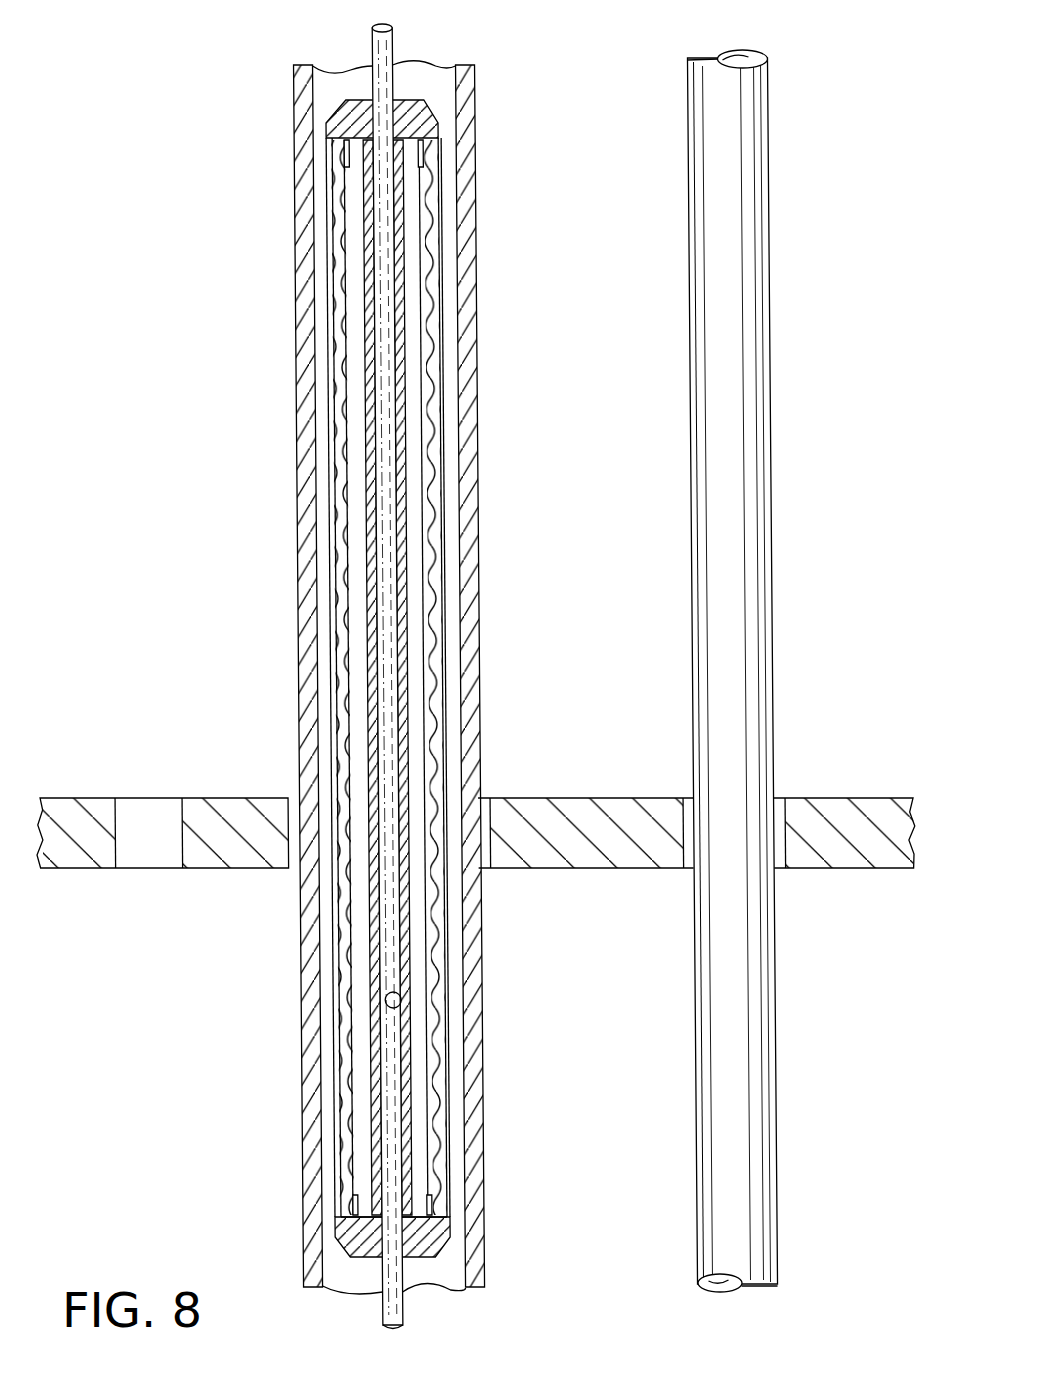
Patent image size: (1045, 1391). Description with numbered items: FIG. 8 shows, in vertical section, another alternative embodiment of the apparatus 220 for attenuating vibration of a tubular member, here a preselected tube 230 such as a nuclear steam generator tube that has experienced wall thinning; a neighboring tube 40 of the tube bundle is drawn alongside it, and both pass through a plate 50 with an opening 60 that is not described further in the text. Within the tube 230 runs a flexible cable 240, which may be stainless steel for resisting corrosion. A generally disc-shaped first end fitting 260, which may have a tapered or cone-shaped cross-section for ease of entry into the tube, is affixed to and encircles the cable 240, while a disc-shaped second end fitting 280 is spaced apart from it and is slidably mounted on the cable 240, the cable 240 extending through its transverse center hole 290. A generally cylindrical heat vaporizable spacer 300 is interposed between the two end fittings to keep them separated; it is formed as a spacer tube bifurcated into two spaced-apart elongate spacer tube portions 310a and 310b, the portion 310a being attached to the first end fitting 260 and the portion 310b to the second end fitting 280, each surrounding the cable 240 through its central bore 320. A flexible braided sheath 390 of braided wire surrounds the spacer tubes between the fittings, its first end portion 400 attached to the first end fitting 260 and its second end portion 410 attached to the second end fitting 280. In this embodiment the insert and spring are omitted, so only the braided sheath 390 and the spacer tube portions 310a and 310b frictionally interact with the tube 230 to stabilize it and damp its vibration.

The tubes 40 is at (736, 100).
The mounting plate 50 is at (808, 860).
The aperture in plate 60 is at (766, 812).
The apparatus 220 is at (327, 241).
The tube 230 is at (293, 93).
The flexible cable 240 is at (395, 42).
The first end fitting 260 is at (433, 115).
The second end fitting 280 is at (430, 1257).
The transverse center hole 290 is at (433, 1223).
The heat vaporizable spacer 300 is at (402, 408).
The spacer tube portion 310a is at (403, 260).
The spacer tube portion 310b is at (397, 937).
The stop 320 is at (393, 1003).
The flexible braided sheath 390 is at (312, 301).
The first end portion 400 is at (342, 157).
The second end portion 410 is at (340, 1175).